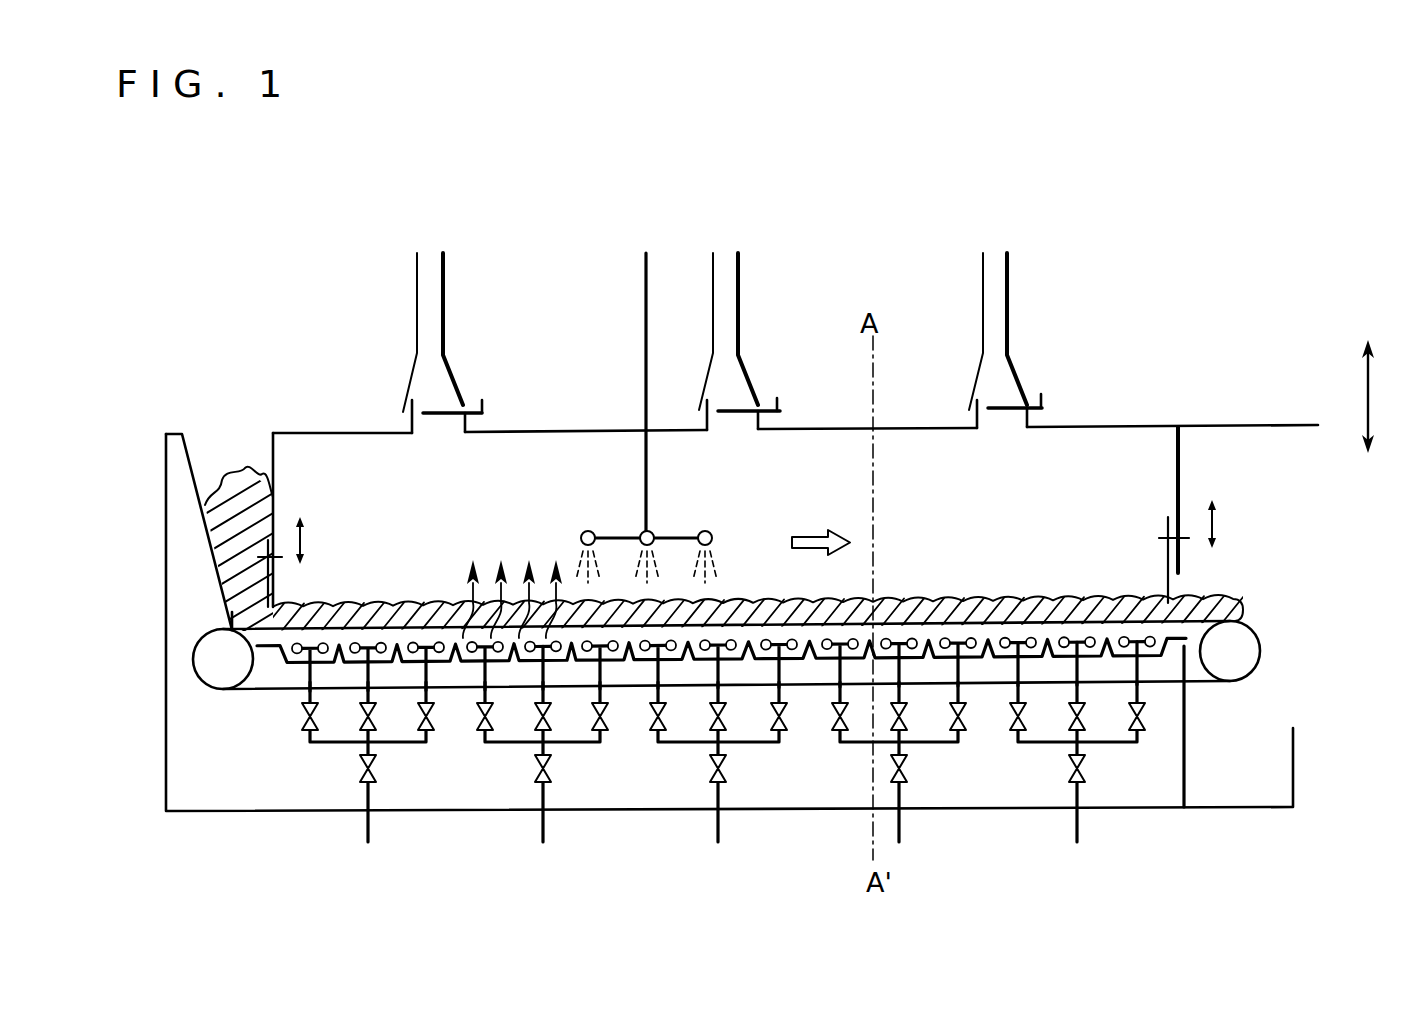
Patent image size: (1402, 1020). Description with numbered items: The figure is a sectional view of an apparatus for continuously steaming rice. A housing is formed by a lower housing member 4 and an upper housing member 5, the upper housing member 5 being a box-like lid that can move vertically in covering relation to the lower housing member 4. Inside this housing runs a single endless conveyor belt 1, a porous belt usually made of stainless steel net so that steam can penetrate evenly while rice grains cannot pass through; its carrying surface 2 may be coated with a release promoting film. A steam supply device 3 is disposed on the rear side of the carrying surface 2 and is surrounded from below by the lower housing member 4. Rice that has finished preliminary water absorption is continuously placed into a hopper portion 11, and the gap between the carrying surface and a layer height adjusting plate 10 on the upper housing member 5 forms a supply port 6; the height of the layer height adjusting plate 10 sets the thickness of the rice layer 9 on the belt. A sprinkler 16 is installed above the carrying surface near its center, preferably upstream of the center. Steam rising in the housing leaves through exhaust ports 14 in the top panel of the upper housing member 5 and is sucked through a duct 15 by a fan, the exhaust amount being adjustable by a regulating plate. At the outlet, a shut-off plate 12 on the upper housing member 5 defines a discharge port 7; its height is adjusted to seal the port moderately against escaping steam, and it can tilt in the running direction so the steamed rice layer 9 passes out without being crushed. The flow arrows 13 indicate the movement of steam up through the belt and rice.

The endless conveyor belt 1 is at (192, 666).
The carrying surface 2 is at (320, 613).
The steam supply device 3 is at (290, 662).
The lower housing member 4 is at (168, 811).
The upper housing member 5 is at (363, 433).
The supply port 6 is at (248, 620).
The discharge port 7 is at (1195, 612).
The rice layer 9 is at (358, 606).
The layer height adjusting plate 10 is at (283, 589).
The hopper portion 11 is at (249, 502).
The shut-off plate 12 is at (1167, 570).
The gas flow 13 is at (517, 534).
The exhaust port 14 is at (424, 428).
The duct 15 is at (446, 323).
The sprinkler 16 is at (680, 517).